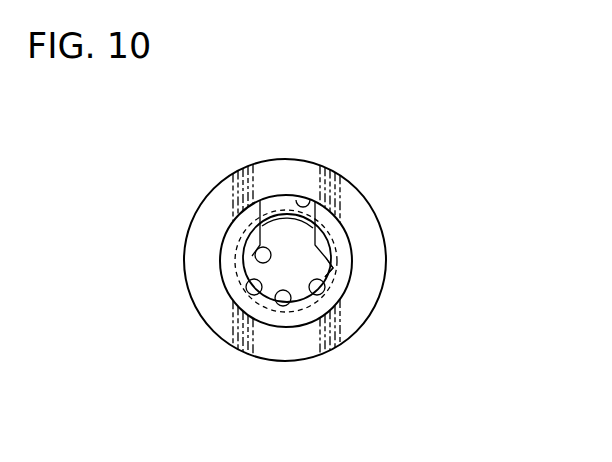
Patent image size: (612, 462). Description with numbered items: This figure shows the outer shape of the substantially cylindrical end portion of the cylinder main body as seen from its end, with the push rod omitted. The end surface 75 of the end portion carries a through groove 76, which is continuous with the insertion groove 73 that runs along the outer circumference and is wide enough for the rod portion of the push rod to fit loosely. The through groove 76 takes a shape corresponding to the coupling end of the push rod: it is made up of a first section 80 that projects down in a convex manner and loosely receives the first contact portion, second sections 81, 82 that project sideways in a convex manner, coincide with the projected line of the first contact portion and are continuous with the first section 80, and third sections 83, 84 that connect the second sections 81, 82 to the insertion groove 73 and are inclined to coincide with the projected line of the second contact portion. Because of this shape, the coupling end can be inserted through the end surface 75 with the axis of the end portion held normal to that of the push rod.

The insertion groove 73 is at (298, 200).
The end surface 75 is at (305, 300).
The through groove 76 is at (325, 233).
The first section 80 is at (286, 300).
The second section 81 is at (250, 300).
The second section 82 is at (316, 290).
The third section 83 is at (256, 242).
The third section 84 is at (330, 251).